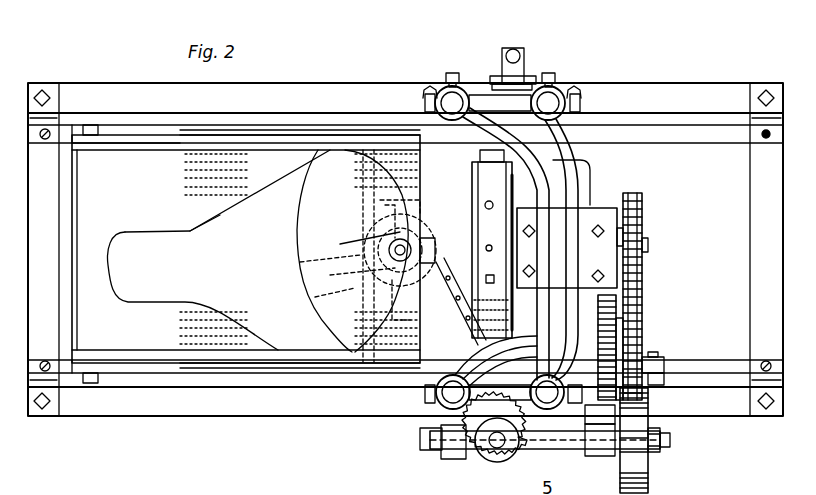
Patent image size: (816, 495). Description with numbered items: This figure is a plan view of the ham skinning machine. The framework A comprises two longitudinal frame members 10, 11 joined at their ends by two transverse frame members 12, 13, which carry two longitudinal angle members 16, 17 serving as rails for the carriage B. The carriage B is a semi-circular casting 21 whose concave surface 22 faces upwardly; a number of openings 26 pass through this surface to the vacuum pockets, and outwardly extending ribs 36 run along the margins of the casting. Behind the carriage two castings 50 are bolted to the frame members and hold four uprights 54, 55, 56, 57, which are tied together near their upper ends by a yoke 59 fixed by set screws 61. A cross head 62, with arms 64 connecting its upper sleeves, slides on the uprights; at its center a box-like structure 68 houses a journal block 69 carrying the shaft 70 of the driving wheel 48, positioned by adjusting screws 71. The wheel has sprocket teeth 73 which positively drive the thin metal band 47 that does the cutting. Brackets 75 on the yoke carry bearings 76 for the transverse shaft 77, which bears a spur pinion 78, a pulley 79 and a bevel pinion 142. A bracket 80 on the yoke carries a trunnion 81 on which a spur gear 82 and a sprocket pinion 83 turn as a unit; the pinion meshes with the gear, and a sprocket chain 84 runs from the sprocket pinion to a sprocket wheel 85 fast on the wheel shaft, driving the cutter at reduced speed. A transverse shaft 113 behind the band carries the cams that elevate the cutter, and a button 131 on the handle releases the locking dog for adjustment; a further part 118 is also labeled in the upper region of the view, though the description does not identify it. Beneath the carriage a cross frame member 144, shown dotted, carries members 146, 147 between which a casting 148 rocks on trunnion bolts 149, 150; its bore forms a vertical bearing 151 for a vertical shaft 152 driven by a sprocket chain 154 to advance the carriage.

The longitudinal frame member 10 is at (115, 90).
The longitudinal frame member 11 is at (197, 405).
The transverse frame member 12 is at (55, 185).
The transverse frame member 13 is at (749, 174).
The longitudinal angle member 16 is at (675, 144).
The longitudinal angle member 17 is at (718, 359).
The casting 21 is at (135, 350).
The concave surface 22 is at (260, 193).
The openings 26 is at (185, 195).
The ribs 36 is at (330, 142).
The metal band 47 is at (592, 178).
The driving wheel 48 is at (472, 195).
The castings 50 is at (585, 100).
The upright 54 is at (432, 412).
The upright 55 is at (660, 420).
The upright 56 is at (450, 100).
The upright 57 is at (560, 90).
The yoke 59 is at (562, 172).
The set screws 61 is at (590, 104).
The cross head 62 is at (580, 183).
The arms 64 is at (540, 72).
The box-like structure 68 is at (620, 245).
The journal block 69 is at (595, 232).
The shaft 70 is at (650, 255).
The adjusting screws 71 is at (537, 271).
The sprocket teeth 73 is at (537, 225).
The brackets 75 is at (428, 432).
The bearings 76 is at (452, 460).
The transverse shaft 77 is at (665, 440).
The spur pinion 78 is at (640, 455).
The pulley 79 is at (655, 450).
The bracket 80 is at (621, 333).
The trunnion 81 is at (656, 357).
The spur gear 82 is at (610, 308).
The sprocket pinion 83 is at (660, 380).
The sprocket chain 84 is at (642, 273).
The sprocket wheel 85 is at (650, 243).
The transverse shaft 113 is at (480, 170).
The bracket 118 is at (500, 72).
The button 131 is at (514, 48).
The bevel pinion 142 is at (510, 462).
The cross frame member 144 is at (362, 206).
The member 146 is at (368, 176).
The member 147 is at (351, 242).
The casting 148 is at (347, 269).
The bolt 149 is at (300, 257).
The bolt 150 is at (438, 262).
The vertical bearing 151 is at (313, 299).
The vertical shaft 152 is at (436, 255).
The sprocket chain 154 is at (459, 301).
The framework A is at (152, 418).
The carriage B is at (193, 282).